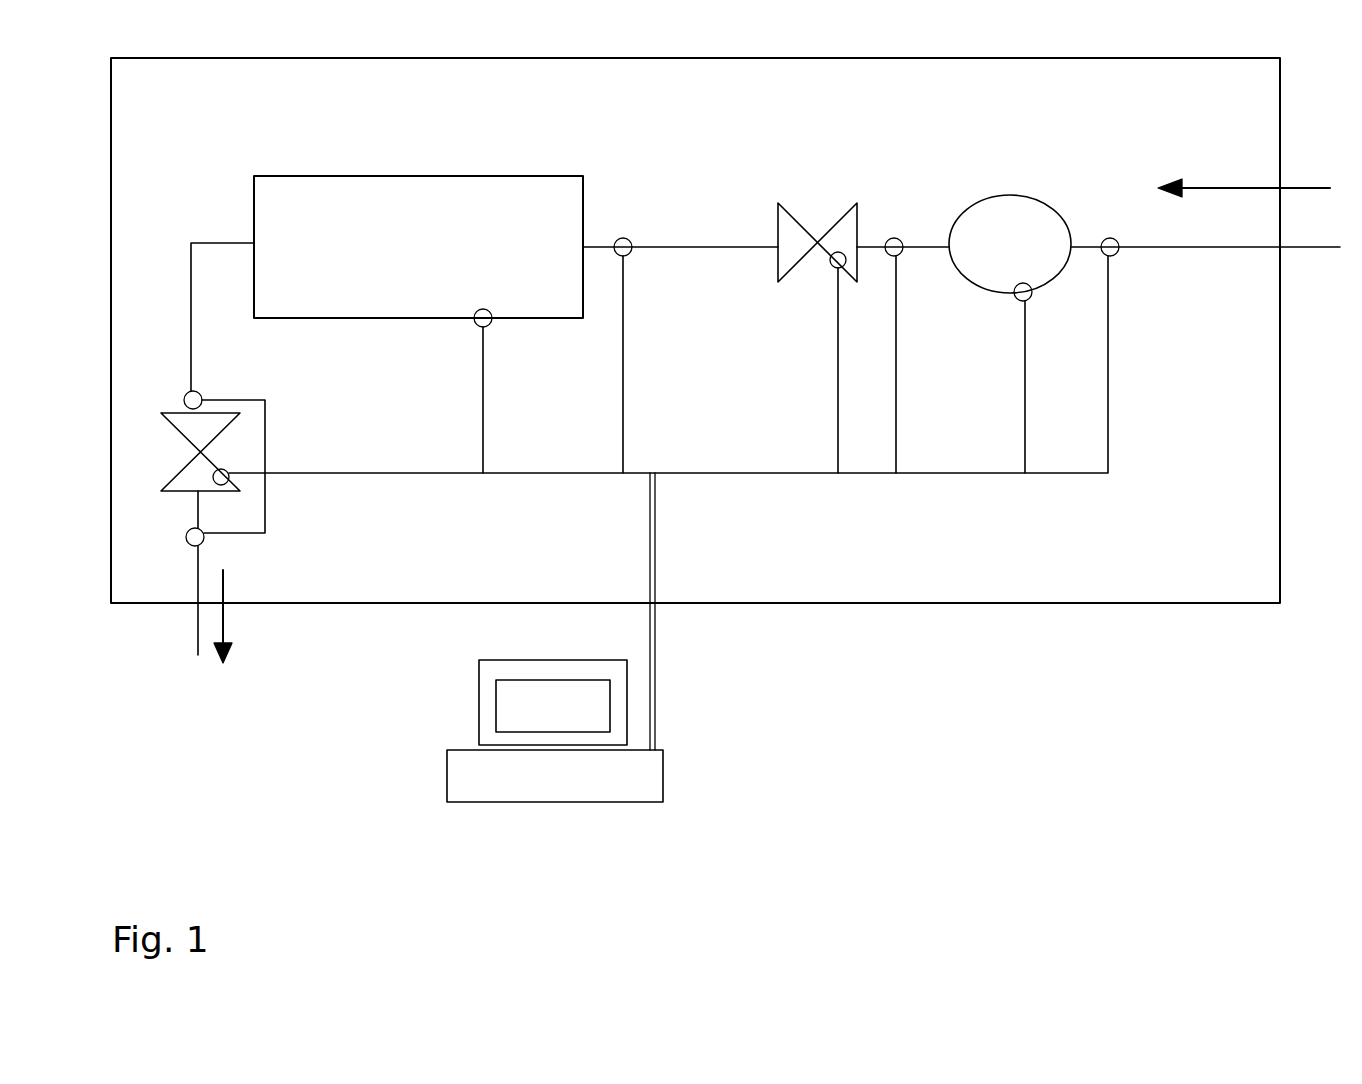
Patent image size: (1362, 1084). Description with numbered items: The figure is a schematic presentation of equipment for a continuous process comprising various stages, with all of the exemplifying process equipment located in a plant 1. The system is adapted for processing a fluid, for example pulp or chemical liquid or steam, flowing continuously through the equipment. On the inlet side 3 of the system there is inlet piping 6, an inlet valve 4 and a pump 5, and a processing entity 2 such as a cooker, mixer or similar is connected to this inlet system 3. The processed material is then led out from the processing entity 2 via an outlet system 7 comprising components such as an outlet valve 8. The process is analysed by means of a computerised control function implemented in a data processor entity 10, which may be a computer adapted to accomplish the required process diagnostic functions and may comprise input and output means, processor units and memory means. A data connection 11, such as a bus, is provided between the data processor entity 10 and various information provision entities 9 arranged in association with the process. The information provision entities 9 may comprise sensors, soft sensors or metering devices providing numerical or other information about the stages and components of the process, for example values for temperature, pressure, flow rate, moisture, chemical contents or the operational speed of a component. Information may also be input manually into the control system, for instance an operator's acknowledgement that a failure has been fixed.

The plant 1 is at (430, 563).
The processing entity 2 is at (342, 306).
The inlet side 3 is at (1185, 372).
The inlet valve 4 is at (803, 253).
The pump 5 is at (977, 263).
The inlet piping 6 is at (710, 250).
The outlet system 7 is at (192, 370).
The outlet valve 8 is at (186, 482).
The information provision entities 9 is at (1030, 299).
The data processor entity 10 is at (532, 787).
The data connection 11 is at (655, 670).